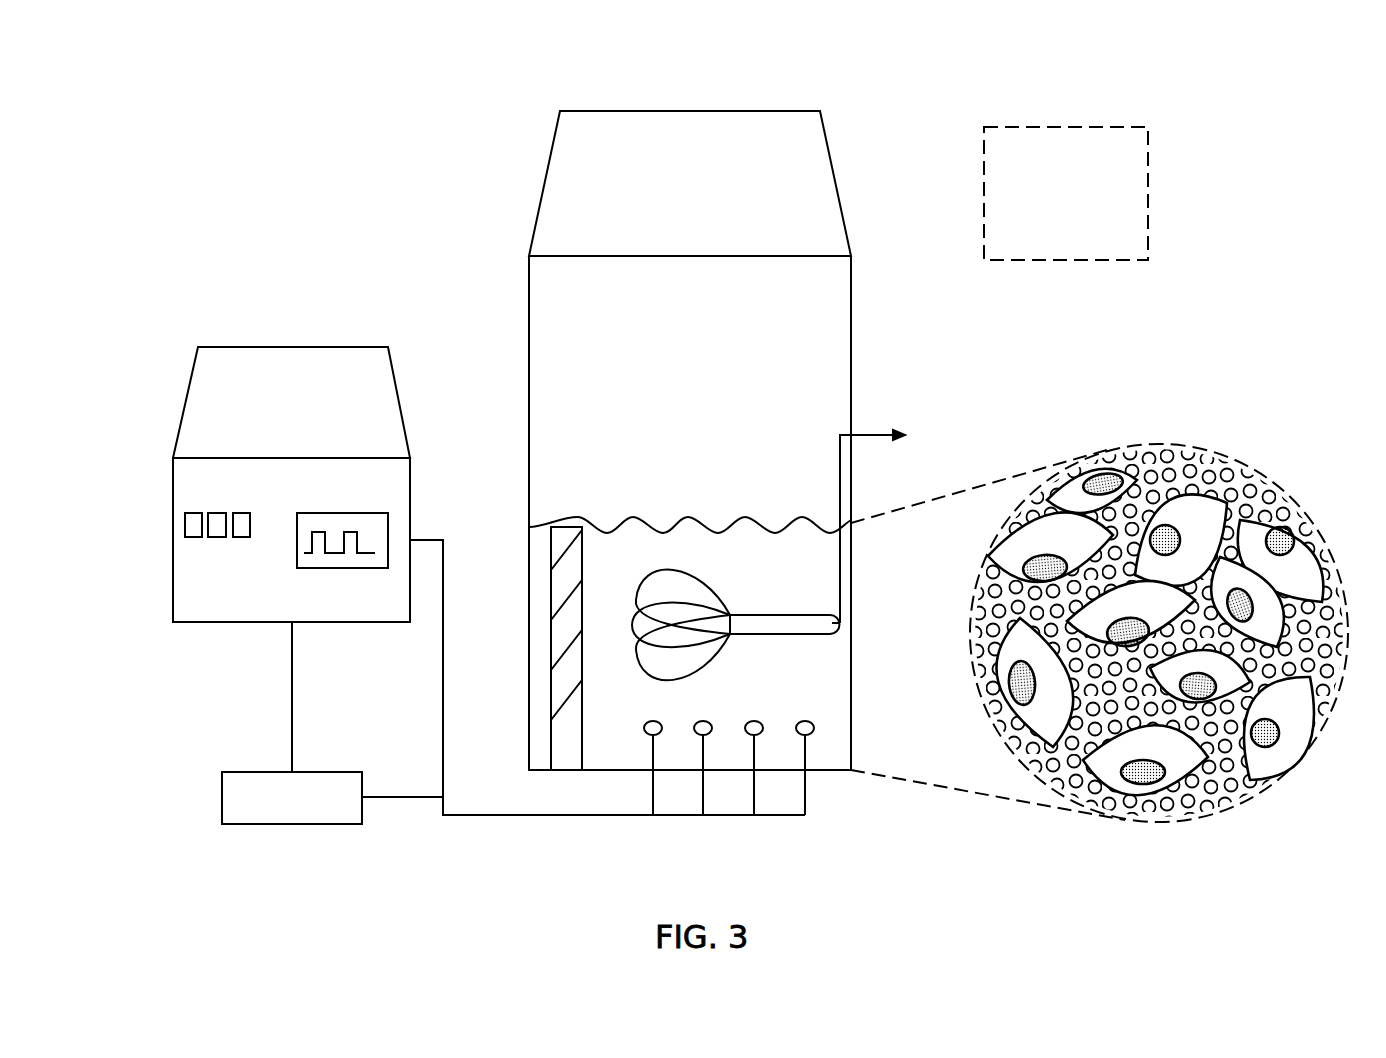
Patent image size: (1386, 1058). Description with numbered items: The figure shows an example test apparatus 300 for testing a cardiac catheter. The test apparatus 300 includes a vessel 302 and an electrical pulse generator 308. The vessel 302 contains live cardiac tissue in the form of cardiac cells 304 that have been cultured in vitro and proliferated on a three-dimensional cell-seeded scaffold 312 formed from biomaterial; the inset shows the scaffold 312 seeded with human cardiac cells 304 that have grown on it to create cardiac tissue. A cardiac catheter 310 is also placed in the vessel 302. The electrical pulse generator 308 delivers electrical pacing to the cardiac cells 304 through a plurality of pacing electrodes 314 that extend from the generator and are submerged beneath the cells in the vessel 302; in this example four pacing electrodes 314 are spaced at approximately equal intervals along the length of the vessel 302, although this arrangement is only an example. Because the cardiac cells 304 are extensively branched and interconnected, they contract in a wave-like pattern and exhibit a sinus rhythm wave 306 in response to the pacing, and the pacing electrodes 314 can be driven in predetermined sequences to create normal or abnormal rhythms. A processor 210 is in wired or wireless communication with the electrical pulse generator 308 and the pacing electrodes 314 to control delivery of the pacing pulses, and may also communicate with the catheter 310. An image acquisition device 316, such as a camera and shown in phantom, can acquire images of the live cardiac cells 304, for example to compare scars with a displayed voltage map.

The test apparatus 300 is at (373, 195).
The vessel 302 is at (648, 153).
The cardiac cells 304 is at (678, 547).
The sinus rhythm wave 306 is at (565, 570).
The electrical pulse generator 308 is at (263, 405).
The cardiac catheter 310 is at (818, 618).
The scaffold 312 is at (1197, 792).
The pacing electrodes 314 is at (648, 732).
The image acquisition device 316 is at (1030, 127).
The processor 210 is at (222, 797).